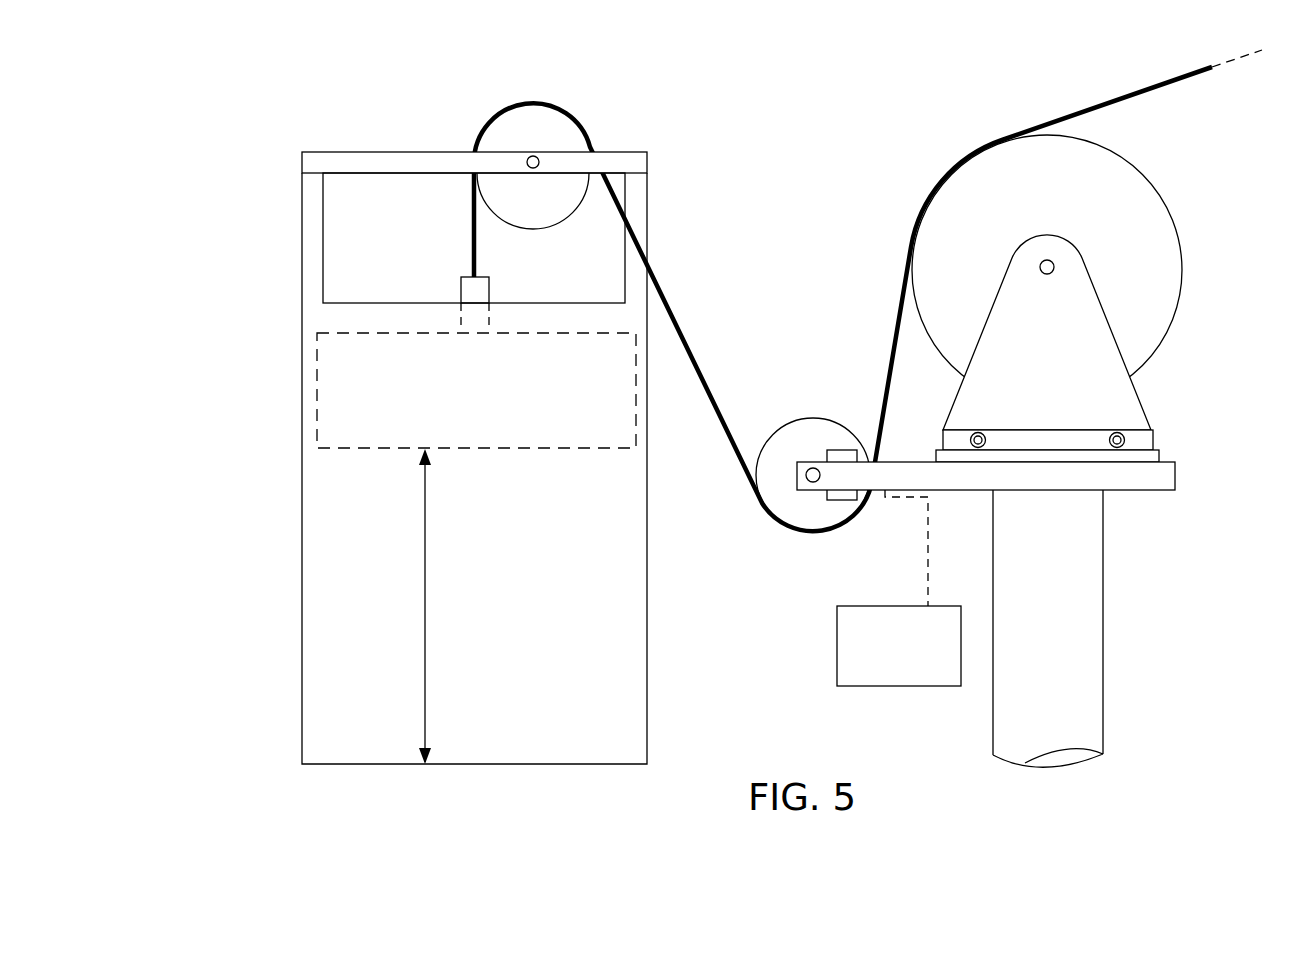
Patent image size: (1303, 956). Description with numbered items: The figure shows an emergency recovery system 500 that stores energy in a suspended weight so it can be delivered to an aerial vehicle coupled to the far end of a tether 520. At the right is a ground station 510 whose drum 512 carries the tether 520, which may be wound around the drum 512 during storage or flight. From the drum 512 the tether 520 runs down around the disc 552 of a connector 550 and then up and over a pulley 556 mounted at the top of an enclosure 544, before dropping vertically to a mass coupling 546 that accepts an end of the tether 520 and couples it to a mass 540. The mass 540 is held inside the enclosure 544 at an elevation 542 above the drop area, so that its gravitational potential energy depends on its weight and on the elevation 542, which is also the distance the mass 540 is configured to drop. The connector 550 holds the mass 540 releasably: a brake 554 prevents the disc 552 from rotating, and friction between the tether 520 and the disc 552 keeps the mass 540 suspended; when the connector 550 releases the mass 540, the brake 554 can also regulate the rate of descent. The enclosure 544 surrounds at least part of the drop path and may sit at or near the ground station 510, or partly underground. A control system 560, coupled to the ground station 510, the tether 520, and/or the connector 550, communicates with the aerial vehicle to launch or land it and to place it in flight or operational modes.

The emergency recovery system 500 is at (795, 90).
The ground station 510 is at (1177, 472).
The drum 512 is at (1173, 248).
The tether 520 is at (693, 350).
The mass 540 is at (318, 390).
The elevation 542 is at (425, 628).
The enclosure 544 is at (648, 633).
The mass coupling 546 is at (492, 292).
The connector 550 is at (822, 460).
The disc 552 is at (792, 512).
The brake 554 is at (851, 494).
The pulley 556 is at (562, 132).
The control system 560 is at (837, 663).